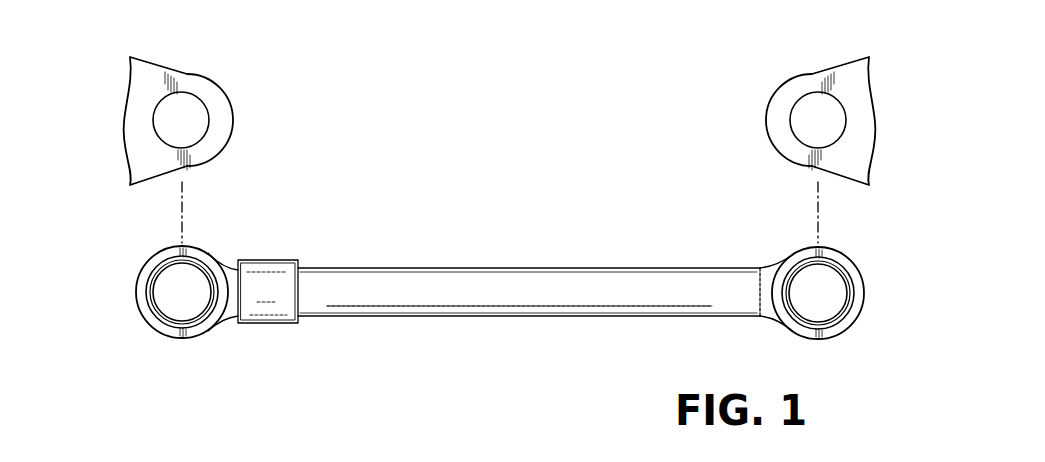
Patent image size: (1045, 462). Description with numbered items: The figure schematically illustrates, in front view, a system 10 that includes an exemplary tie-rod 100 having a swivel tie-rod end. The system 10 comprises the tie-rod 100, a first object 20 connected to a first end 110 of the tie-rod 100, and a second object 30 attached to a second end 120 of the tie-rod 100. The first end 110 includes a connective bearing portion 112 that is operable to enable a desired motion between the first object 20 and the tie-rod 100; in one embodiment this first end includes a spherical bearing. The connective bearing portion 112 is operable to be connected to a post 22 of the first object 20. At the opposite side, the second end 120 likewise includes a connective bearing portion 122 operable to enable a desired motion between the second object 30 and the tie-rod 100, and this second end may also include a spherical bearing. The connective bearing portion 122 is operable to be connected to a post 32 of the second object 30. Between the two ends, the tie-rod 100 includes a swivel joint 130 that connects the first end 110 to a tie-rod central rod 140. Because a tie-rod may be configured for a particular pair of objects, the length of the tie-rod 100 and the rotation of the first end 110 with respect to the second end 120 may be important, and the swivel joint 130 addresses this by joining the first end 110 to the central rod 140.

The system 10 is at (83, 101).
The first object 20 is at (188, 73).
The post 22 is at (203, 107).
The second object 30 is at (820, 72).
The post 32 is at (791, 108).
The tie-rod 100 is at (465, 268).
The first end 110 is at (148, 323).
The connective bearing portion 112 is at (215, 327).
The second end 120 is at (847, 257).
The connective bearing portion 122 is at (852, 310).
The swivel joint 130 is at (277, 323).
The tie-rod central rod 140 is at (588, 282).